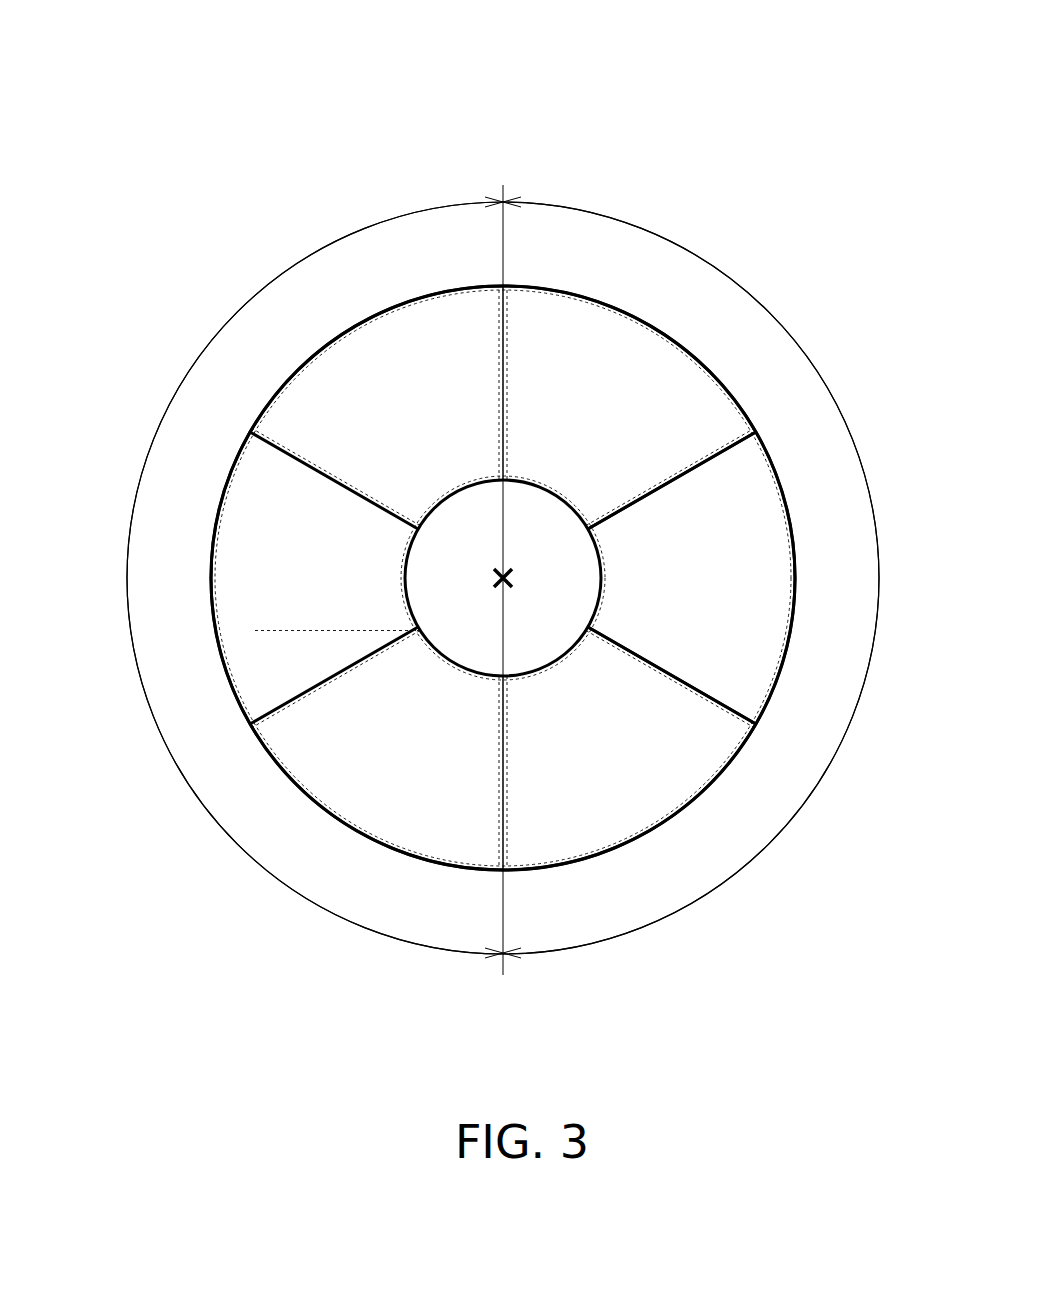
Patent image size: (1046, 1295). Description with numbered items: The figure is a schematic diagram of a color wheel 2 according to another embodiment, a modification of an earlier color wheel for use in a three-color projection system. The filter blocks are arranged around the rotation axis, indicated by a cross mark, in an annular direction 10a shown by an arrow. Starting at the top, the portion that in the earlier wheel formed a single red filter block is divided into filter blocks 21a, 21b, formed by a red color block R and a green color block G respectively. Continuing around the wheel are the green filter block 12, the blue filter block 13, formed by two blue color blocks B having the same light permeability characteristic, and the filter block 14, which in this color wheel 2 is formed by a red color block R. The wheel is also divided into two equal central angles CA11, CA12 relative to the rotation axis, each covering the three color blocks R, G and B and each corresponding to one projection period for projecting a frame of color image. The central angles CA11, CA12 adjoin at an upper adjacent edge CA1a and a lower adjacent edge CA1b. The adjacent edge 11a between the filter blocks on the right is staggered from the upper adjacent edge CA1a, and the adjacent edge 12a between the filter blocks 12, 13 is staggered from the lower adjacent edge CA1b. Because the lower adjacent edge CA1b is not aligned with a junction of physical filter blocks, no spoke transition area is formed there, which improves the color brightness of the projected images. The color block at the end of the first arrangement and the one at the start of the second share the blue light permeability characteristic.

The color wheel 2 is at (758, 117).
The annular direction 10a is at (497, 508).
The adjacent edge 11a is at (704, 454).
The filter block 12 is at (771, 417).
The adjacent edge 12a is at (730, 705).
The filter block 13 is at (229, 730).
The filter block 14 is at (235, 417).
The filter block 21a is at (777, 426).
The filter block 21b is at (508, 265).
The adjacent edge CA1a is at (497, 336).
The adjacent edge CA1b is at (500, 815).
The central angle CA11 is at (734, 578).
The central angle CA12 is at (271, 578).